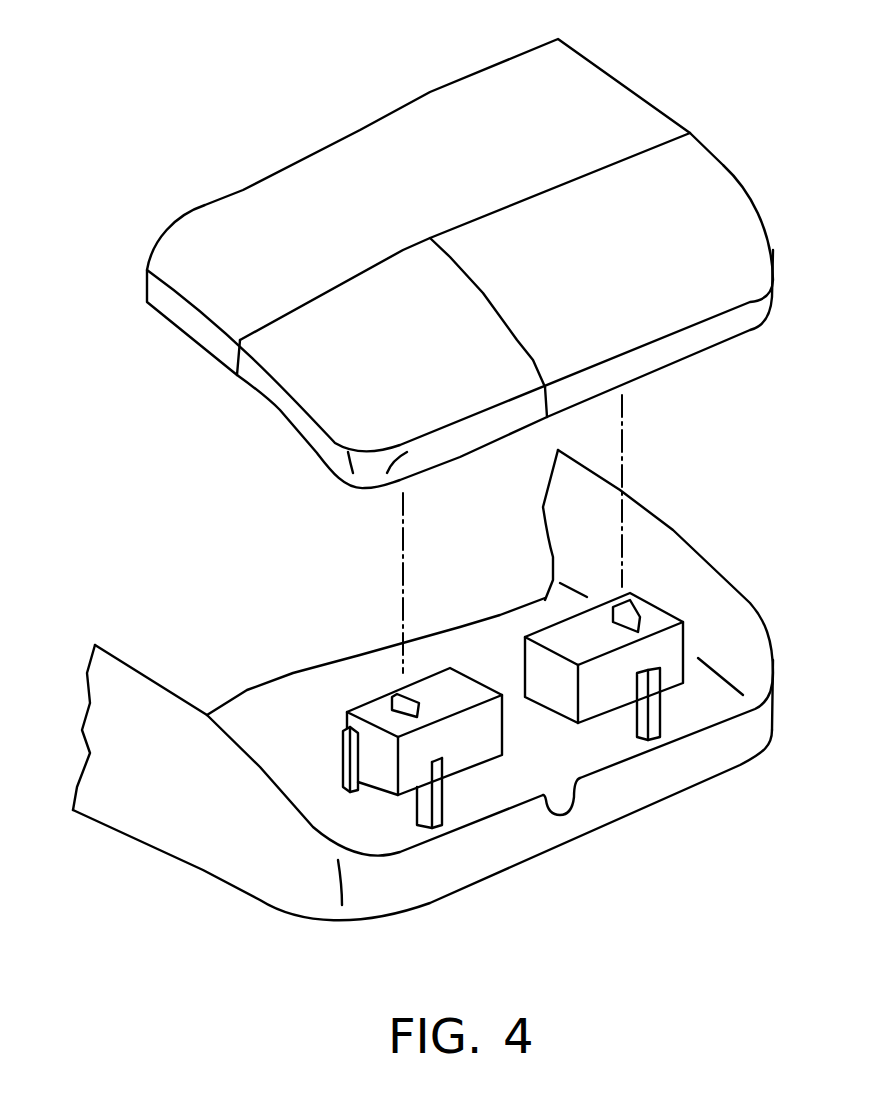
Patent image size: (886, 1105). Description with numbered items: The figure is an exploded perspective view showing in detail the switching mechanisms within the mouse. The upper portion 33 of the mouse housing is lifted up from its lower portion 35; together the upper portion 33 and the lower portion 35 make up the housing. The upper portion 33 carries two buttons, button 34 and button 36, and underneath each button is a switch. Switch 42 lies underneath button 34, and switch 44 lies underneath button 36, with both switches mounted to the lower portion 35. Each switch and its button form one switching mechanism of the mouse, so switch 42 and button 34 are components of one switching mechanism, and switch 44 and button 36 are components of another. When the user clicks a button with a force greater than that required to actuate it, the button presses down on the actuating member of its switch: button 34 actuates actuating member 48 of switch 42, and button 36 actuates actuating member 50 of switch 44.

The upper portion 33 is at (358, 157).
The button 34 is at (710, 183).
The lower portion 35 is at (130, 803).
The button 36 is at (330, 375).
The switch 42 is at (673, 642).
The switch 44 is at (385, 762).
The actuating member 48 is at (655, 613).
The actuating member 50 is at (375, 710).